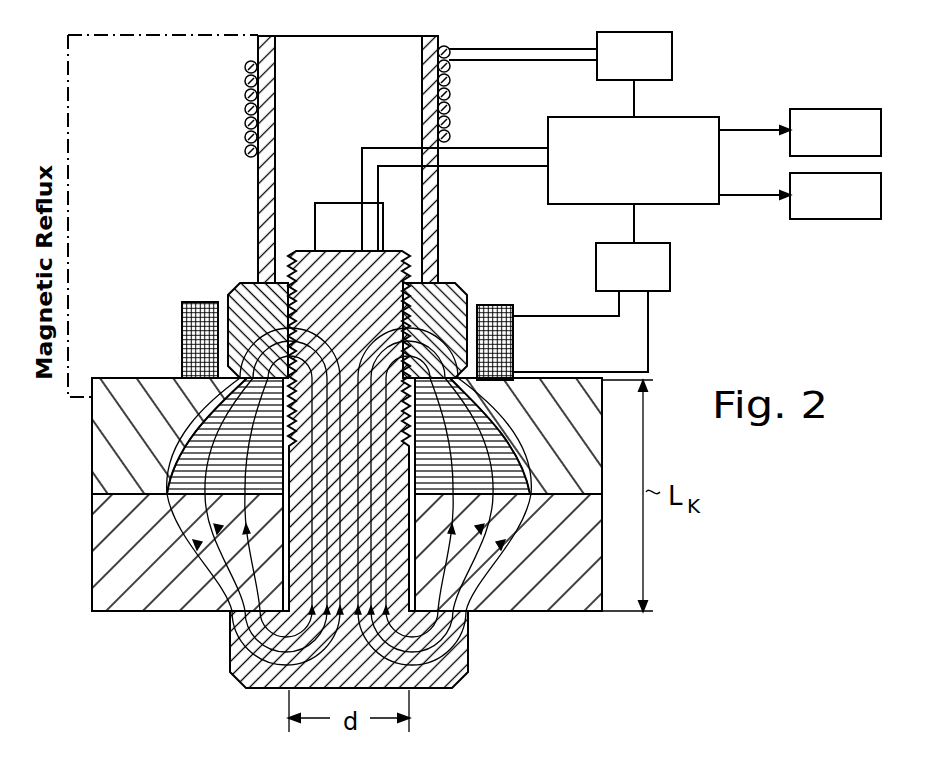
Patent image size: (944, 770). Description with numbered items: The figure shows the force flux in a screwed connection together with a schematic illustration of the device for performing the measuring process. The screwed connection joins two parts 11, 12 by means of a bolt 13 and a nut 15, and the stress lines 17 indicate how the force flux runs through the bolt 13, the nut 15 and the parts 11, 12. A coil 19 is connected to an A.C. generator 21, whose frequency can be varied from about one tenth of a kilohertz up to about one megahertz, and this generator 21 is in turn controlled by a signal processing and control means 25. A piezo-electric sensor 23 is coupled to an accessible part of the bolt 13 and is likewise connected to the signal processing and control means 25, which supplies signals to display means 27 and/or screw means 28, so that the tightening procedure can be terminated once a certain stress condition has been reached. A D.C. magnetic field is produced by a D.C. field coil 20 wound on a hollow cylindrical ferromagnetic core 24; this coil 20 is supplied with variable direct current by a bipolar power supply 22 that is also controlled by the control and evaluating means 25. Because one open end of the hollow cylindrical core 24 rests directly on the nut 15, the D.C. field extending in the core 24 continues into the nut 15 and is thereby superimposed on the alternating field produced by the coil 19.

The part 11 is at (95, 443).
The part 12 is at (100, 548).
The bolt 13 is at (240, 655).
The nut 15 is at (247, 292).
The stress lines 17 is at (505, 611).
The coil 19 is at (182, 318).
The D.C. field coil 20 is at (246, 97).
The A.C. generator 21 is at (665, 268).
The bipolar power supply 22 is at (666, 52).
The piezo-electric sensor 23 is at (345, 215).
The hollow cylindrical ferromagnetic core 24 is at (262, 183).
The signal processing and control means 25 is at (647, 175).
The display means 27 is at (838, 118).
The screw means 28 is at (846, 200).